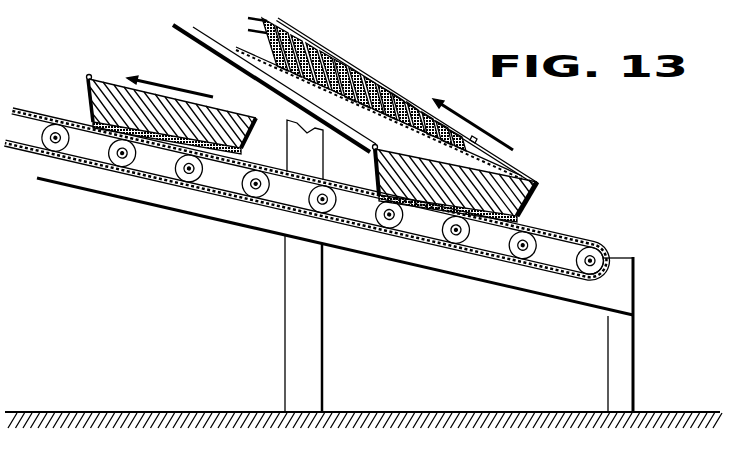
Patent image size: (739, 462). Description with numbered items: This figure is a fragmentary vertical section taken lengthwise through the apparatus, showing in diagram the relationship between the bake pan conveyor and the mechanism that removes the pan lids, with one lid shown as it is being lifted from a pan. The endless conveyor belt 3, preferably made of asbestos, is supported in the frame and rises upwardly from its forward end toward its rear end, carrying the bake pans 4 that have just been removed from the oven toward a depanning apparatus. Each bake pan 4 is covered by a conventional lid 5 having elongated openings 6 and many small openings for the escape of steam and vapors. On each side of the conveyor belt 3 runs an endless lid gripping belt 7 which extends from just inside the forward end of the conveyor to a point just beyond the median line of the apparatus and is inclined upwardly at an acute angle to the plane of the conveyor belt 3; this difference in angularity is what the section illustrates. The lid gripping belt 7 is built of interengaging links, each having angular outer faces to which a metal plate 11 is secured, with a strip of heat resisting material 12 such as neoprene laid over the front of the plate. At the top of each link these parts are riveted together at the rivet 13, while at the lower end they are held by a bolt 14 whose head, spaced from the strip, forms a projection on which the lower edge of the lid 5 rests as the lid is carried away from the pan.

The endless conveyor belt 3 is at (110, 130).
The bake pan 4 is at (103, 106).
The lid 5 is at (490, 166).
The elongated openings 6 is at (413, 112).
The lid gripping belt 7 is at (256, 52).
The metal plate 11 is at (306, 353).
The strip of heat resisting material 12 is at (614, 303).
The rivet 13 is at (306, 461).
The bolt 14 is at (318, 61).